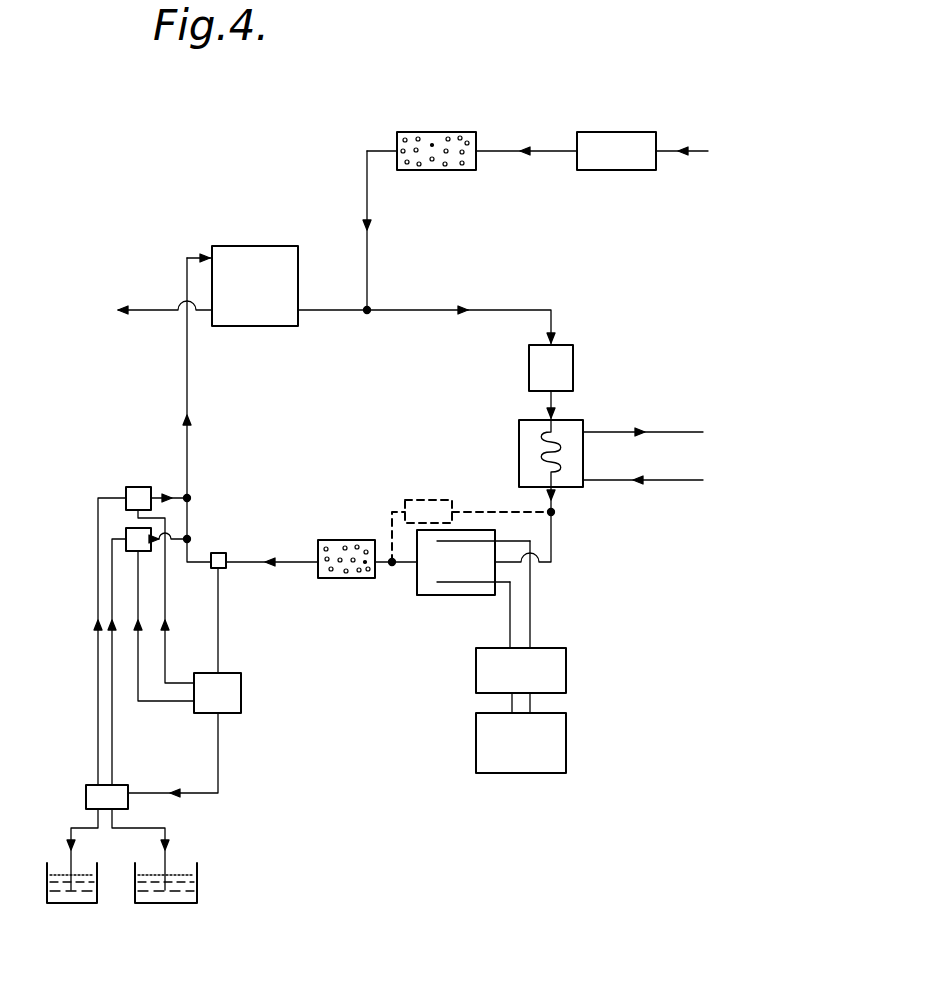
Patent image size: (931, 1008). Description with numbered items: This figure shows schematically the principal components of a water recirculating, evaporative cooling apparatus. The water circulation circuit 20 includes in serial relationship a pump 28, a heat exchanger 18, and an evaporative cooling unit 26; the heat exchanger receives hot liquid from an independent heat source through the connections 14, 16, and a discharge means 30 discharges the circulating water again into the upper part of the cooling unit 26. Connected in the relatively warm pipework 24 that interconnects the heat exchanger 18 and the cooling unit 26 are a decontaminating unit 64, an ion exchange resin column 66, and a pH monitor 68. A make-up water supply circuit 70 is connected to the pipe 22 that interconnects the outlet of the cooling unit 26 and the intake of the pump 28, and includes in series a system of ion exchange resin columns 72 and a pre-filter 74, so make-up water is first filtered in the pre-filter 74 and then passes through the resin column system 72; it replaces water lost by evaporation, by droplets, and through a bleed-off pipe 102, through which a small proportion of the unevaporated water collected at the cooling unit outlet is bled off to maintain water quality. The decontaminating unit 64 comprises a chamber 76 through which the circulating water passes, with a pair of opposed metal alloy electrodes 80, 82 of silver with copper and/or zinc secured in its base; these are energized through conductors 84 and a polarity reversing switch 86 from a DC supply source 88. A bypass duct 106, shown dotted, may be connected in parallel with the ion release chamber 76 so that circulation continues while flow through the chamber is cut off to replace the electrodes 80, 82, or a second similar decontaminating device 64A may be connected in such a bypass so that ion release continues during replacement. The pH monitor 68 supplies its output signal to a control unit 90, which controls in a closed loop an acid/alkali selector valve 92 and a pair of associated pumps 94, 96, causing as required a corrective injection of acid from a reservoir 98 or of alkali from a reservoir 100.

The primary circuit connection 14 is at (669, 482).
The primary circuit connection 16 is at (688, 432).
The heat exchanger 18 is at (519, 418).
The water circulation circuit 20 is at (472, 319).
The pipe 22 is at (500, 310).
The pipework 24 is at (186, 362).
The evaporative cooling unit 26 is at (286, 246).
The pump 28 is at (573, 355).
The discharge means 30 is at (194, 254).
The decontaminating unit 64 is at (472, 601).
The second decontaminating device 64A is at (406, 498).
The ion exchange resin column 66 is at (376, 542).
The pH monitor 68 is at (220, 553).
The make-up water supply circuit 70 is at (500, 146).
The ion exchange resin column system 72 is at (434, 132).
The pre-filter 74 is at (630, 132).
The chamber 76 is at (412, 590).
The electrode 80 is at (443, 582).
The electrode 82 is at (458, 540).
The conductors 84 is at (530, 622).
The polarity reversing switch 86 is at (566, 672).
The DC supply source 88 is at (566, 733).
The control unit 90 is at (241, 688).
The acid/alkali selector valve 92 is at (90, 785).
The pump 94 is at (143, 487).
The pump 96 is at (126, 534).
The acid reservoir 98 is at (75, 905).
The alkali reservoir 100 is at (180, 905).
The bleed-off pipe 102 is at (148, 310).
The bypass duct 106 is at (460, 510).